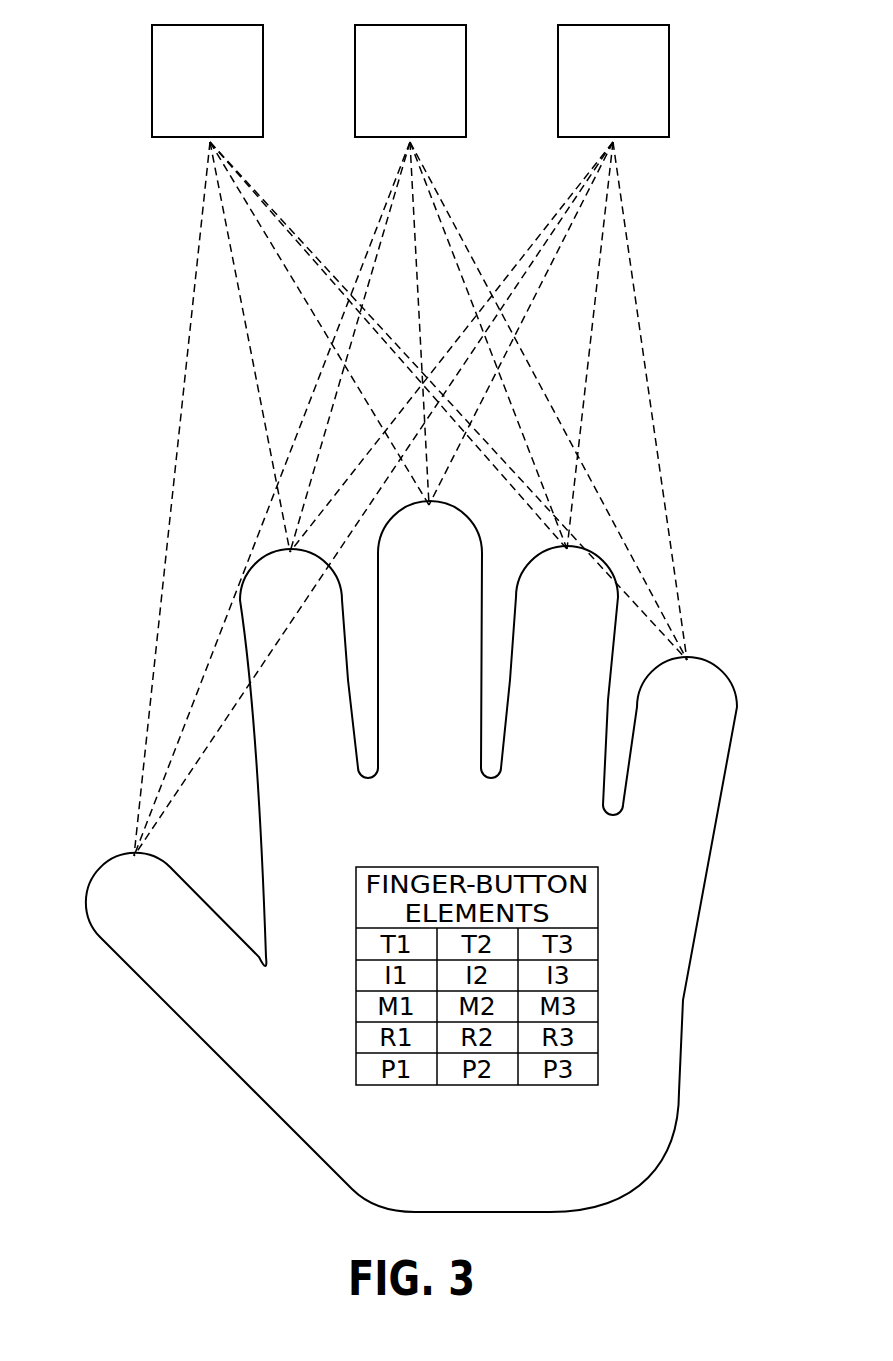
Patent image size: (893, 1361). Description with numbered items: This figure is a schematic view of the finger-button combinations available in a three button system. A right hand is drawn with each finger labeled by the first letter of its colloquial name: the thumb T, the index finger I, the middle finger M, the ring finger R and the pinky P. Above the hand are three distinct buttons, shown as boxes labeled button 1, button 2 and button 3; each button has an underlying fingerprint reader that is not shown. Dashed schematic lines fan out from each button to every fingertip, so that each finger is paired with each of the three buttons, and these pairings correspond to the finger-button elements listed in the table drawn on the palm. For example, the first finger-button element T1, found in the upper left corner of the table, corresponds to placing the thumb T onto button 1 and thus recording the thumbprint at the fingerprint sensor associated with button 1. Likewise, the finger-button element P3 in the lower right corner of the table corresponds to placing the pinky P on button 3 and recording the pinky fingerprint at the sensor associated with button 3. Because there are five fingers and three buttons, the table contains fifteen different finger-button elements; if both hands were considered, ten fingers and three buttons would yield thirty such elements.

The button 1 is at (207, 81).
The button 2 is at (410, 81).
The button 3 is at (613, 81).
The thumb T is at (250, 1032).
The index finger I is at (309, 753).
The middle finger M is at (439, 639).
The ring finger R is at (562, 680).
The pinky P is at (576, 934).
The first finger-button element T1 is at (157, 499).
The finger-button element P3 is at (666, 401).